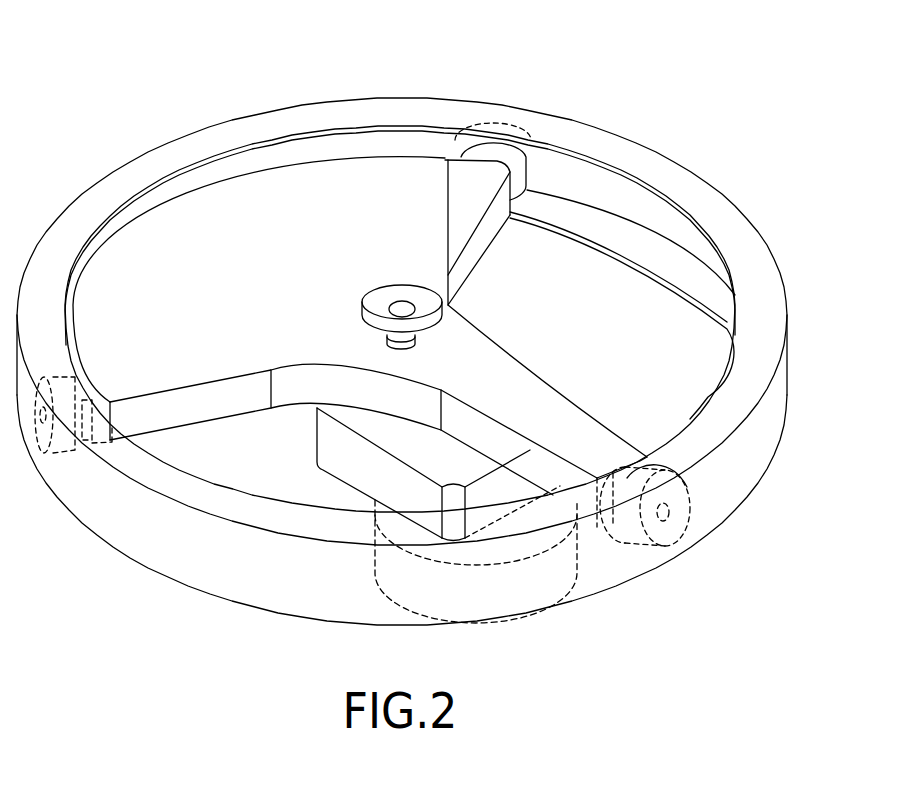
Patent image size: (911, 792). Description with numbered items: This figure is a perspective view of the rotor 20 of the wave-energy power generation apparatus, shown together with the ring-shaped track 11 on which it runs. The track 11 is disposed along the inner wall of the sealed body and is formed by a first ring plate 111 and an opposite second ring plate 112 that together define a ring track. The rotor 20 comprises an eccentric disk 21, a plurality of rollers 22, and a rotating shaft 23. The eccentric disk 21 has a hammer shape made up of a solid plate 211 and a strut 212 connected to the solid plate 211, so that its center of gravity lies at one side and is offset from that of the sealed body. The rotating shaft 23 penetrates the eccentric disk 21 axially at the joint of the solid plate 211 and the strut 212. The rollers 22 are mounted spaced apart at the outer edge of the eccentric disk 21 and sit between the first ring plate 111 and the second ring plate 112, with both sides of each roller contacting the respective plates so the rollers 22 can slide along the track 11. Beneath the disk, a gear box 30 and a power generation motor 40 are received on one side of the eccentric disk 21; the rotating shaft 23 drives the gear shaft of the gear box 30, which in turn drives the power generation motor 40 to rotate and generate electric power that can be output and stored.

The track 11 is at (434, 361).
The first ring plate 111 is at (655, 178).
The second ring plate 112 is at (667, 262).
The rotor 20 is at (360, 270).
The eccentric disk 21 is at (380, 153).
The solid plate 211 is at (316, 178).
The strut 212 is at (527, 405).
The rollers 22 is at (513, 162).
The rotating shaft 23 is at (401, 300).
The gear box 30 is at (358, 470).
The power generation motor 40 is at (555, 578).